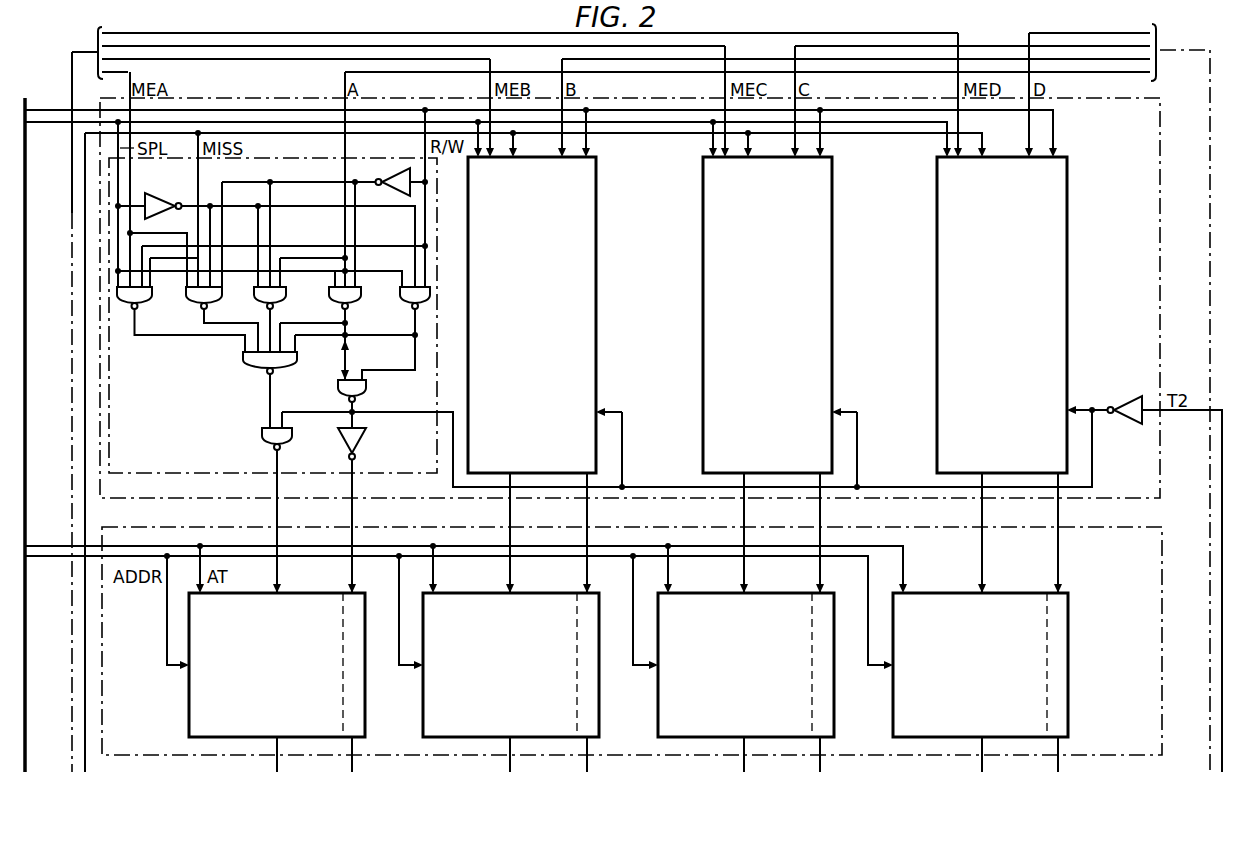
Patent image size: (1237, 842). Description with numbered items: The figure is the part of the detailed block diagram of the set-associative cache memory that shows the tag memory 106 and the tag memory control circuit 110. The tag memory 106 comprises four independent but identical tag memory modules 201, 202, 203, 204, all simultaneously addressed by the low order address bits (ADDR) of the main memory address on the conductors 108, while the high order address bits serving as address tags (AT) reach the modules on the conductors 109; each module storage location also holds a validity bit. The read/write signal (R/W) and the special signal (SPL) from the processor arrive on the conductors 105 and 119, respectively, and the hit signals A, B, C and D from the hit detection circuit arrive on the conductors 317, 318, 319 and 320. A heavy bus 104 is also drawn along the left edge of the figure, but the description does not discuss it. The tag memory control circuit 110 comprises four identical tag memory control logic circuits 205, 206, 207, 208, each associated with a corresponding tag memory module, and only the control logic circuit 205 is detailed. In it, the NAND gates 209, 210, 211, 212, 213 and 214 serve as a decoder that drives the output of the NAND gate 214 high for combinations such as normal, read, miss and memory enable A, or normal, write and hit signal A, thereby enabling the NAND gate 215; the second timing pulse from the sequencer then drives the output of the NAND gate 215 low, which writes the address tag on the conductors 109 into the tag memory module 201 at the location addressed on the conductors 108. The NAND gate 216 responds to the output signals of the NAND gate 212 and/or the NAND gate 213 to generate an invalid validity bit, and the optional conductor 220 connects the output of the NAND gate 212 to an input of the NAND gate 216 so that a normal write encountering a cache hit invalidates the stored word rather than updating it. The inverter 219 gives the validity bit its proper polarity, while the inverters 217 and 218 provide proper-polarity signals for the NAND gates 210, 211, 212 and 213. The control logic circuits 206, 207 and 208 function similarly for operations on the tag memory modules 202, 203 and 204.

The bus 104 is at (50, 400).
The conductors 105 is at (47, 109).
The tag memory 106 is at (1178, 556).
The conductors 108 is at (49, 560).
The conductors 109 is at (47, 544).
The tag memory control circuit 110 is at (1160, 142).
The conductors 119 is at (47, 125).
The tag memory module 201 is at (189, 720).
The tag memory module 202 is at (423, 720).
The tag memory module 203 is at (658, 720).
The tag memory module 204 is at (893, 720).
The tag memory control logic circuit 205 is at (186, 474).
The tag memory control logic circuit 206 is at (596, 309).
The tag memory control logic circuit 207 is at (832, 307).
The tag memory control logic circuit 208 is at (1067, 307).
The NAND gate 209 is at (143, 301).
The NAND gate 210 is at (212, 301).
The NAND gate 211 is at (278, 301).
The NAND gate 212 is at (356, 296).
The NAND gate 213 is at (422, 309).
The NAND gate 214 is at (282, 362).
The NAND gate 215 is at (290, 441).
The NAND gate 216 is at (367, 389).
The inverter 217 is at (168, 184).
The inverter 218 is at (382, 172).
The inverter 219 is at (367, 433).
The conductor 220 is at (348, 353).
The conductor 317 is at (407, 73).
The conductor 318 is at (617, 60).
The conductor 319 is at (860, 47).
The conductor 320 is at (1085, 34).